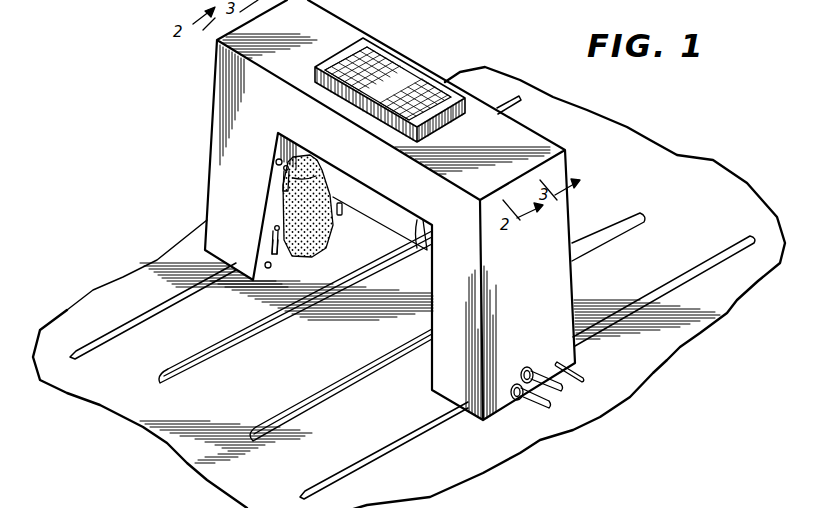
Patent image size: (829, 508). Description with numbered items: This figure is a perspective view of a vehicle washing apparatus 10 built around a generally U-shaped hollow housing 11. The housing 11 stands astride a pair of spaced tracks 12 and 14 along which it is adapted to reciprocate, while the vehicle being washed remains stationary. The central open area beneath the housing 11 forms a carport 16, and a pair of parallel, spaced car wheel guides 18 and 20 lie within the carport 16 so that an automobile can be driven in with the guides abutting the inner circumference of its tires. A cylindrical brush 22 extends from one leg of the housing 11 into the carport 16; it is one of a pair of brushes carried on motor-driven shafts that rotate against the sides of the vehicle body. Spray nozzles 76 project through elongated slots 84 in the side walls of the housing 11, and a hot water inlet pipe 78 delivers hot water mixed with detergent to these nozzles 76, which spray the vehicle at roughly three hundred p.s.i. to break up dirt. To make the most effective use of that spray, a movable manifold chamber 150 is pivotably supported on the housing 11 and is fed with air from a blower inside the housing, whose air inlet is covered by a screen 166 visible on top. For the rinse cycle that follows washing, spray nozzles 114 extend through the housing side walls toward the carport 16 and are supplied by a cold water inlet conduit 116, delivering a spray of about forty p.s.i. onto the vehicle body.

The vehicle washing apparatus 10 is at (415, 57).
The housing 11 is at (220, 90).
The track 12 is at (134, 326).
The track 14 is at (373, 457).
The carport 16 is at (383, 279).
The car wheel guide 18 is at (280, 313).
The car wheel guide 20 is at (343, 375).
The cylindrical brush 22 is at (318, 236).
The spray nozzle 76 is at (273, 236).
The hot water inlet pipe 78 is at (531, 378).
The elongated slot 84 is at (272, 248).
The spray nozzle 114 is at (277, 162).
The cold water inlet conduit 116 is at (523, 397).
The manifold chamber 150 is at (378, 202).
The screen 166 is at (375, 66).